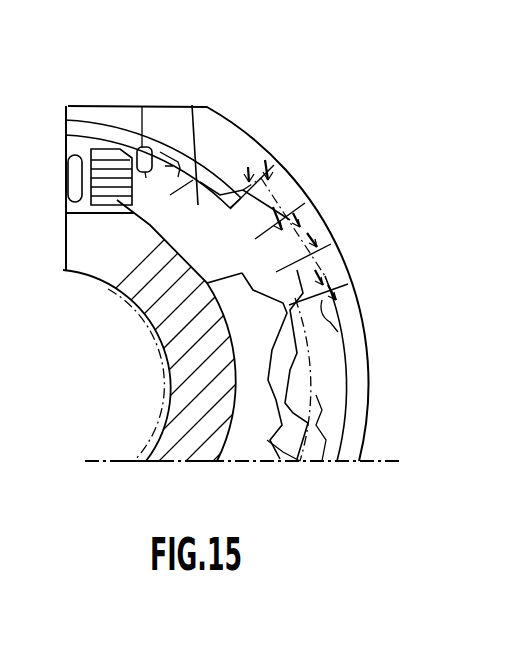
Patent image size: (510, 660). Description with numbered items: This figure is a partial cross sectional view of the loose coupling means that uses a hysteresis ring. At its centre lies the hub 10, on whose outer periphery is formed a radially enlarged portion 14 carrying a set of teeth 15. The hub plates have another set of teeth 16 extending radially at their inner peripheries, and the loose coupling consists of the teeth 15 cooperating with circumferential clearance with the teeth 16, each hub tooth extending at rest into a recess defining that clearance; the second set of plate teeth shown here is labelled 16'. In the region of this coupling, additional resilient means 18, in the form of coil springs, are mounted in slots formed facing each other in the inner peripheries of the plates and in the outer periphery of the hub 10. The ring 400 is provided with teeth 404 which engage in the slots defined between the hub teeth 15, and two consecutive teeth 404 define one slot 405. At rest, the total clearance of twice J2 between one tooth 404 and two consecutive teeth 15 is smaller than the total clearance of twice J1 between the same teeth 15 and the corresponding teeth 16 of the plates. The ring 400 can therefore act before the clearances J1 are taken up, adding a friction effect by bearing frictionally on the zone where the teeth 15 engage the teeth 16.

The hub 10 is at (182, 440).
The radially enlarged portion of the hub 14 is at (142, 107).
The teeth 15 is at (190, 107).
The teeth 16 is at (271, 379).
The carrier segment 16' is at (345, 428).
The resilient means 18 is at (107, 106).
The ring 400 is at (253, 140).
The teeth 404 is at (152, 302).
The slot 405 is at (342, 348).
The clearance J1 is at (283, 162).
The clearance J2 is at (376, 320).